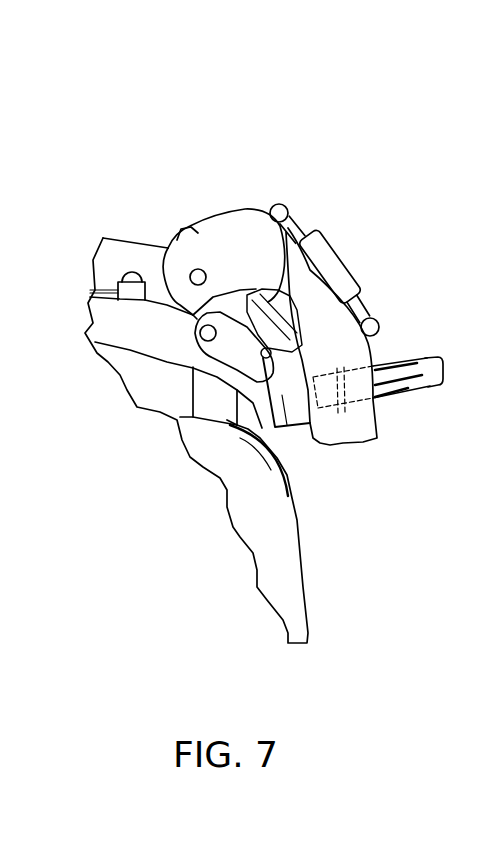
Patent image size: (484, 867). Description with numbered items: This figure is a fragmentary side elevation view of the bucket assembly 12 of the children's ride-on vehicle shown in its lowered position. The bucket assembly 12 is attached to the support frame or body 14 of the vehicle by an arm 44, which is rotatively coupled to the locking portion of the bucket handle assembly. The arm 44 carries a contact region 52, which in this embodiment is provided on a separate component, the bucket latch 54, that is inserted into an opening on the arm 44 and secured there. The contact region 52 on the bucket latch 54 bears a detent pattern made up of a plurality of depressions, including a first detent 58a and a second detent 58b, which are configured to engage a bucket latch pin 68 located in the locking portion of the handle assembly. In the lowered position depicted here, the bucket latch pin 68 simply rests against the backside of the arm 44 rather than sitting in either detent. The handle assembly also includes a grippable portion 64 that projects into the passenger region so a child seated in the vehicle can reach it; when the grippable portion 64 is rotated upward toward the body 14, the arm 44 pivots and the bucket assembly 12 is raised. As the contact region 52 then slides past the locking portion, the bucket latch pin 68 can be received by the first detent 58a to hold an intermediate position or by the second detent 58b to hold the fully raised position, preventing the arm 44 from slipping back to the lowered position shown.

The bucket assembly 12 is at (406, 226).
The body 14 is at (242, 515).
The arm 44 is at (366, 419).
The contact region 52 is at (271, 358).
The bucket latch 54 is at (278, 317).
The first detent 58a is at (265, 322).
The second detent 58b is at (268, 330).
The grippable portion 64 is at (420, 363).
The bucket latch pin 68 is at (280, 366).